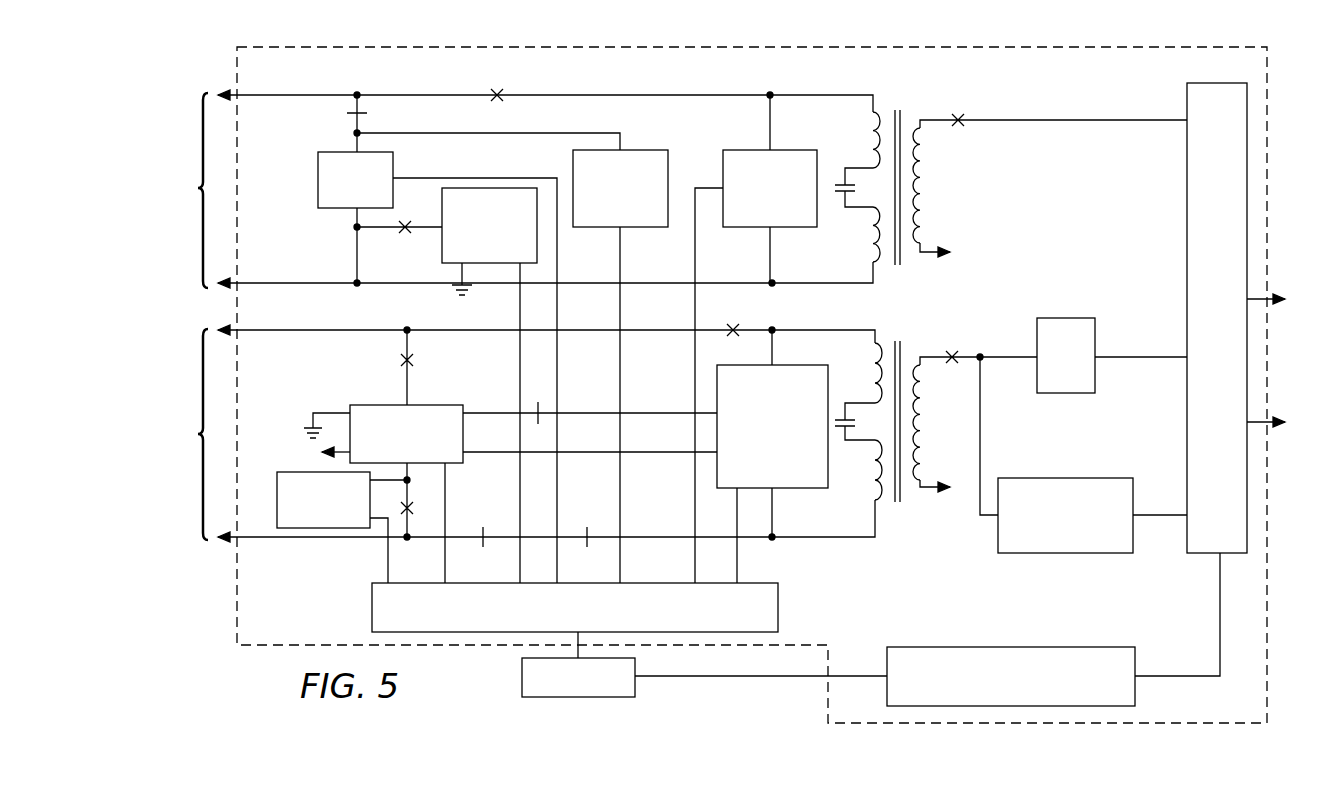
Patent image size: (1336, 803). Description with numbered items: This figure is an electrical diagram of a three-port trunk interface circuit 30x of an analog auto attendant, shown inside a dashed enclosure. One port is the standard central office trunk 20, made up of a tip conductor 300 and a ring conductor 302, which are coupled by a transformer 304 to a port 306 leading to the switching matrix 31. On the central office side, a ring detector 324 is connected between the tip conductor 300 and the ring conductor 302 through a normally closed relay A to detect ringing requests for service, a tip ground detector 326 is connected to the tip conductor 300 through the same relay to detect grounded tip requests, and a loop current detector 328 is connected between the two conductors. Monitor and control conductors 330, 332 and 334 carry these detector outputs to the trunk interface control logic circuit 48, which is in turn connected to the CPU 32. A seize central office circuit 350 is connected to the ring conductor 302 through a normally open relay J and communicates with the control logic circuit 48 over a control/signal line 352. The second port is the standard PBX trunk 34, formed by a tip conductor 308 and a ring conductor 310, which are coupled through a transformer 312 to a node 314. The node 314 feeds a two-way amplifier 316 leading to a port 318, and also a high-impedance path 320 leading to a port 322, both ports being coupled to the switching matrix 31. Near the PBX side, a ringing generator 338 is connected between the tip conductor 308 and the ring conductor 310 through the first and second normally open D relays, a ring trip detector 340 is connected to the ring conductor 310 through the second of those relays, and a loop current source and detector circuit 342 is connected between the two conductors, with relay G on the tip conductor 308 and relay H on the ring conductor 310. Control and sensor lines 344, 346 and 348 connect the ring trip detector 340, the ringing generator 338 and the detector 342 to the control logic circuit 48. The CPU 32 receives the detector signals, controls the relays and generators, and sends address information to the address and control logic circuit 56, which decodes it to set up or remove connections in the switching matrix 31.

The three-port trunk interface circuit 30x is at (628, 47).
The central office trunk 20 is at (190, 190).
The PBX trunk 34 is at (190, 434).
The tip conductor 300 is at (300, 96).
The ring conductor 302 is at (293, 283).
The tip conductor 308 is at (298, 332).
The ring conductor 310 is at (298, 540).
The ring detector 324 is at (395, 176).
The tip ground detector 326 is at (637, 150).
The loop current detector 328 is at (790, 150).
The monitor and control conductor 330 is at (500, 177).
The monitor and control conductor 332 is at (620, 376).
The monitor and control conductor 334 is at (695, 376).
The seize central office circuit 350 is at (442, 243).
The control/signal line 352 is at (520, 365).
The transformer 304 is at (898, 112).
The port 306 is at (1148, 120).
The ringing generator 338 is at (388, 405).
The ring trip detector 340 is at (290, 472).
The loop current source and detector circuit 342 is at (800, 365).
The control and sensor line 344 is at (388, 566).
The control and sensor line 346 is at (447, 503).
The control and sensor line 348 is at (738, 566).
The transformer 312 is at (898, 345).
The node 314 is at (981, 355).
The two-way amplifier 316 is at (1065, 318).
The port 318 is at (1150, 357).
The high-impedance path 320 is at (1065, 478).
The port 322 is at (1150, 515).
The switching matrix 31 is at (1261, 318).
The trunk interface control logic circuit 48 is at (575, 607).
The CPU 32 is at (522, 677).
The address and control logic circuit 56 is at (1010, 647).